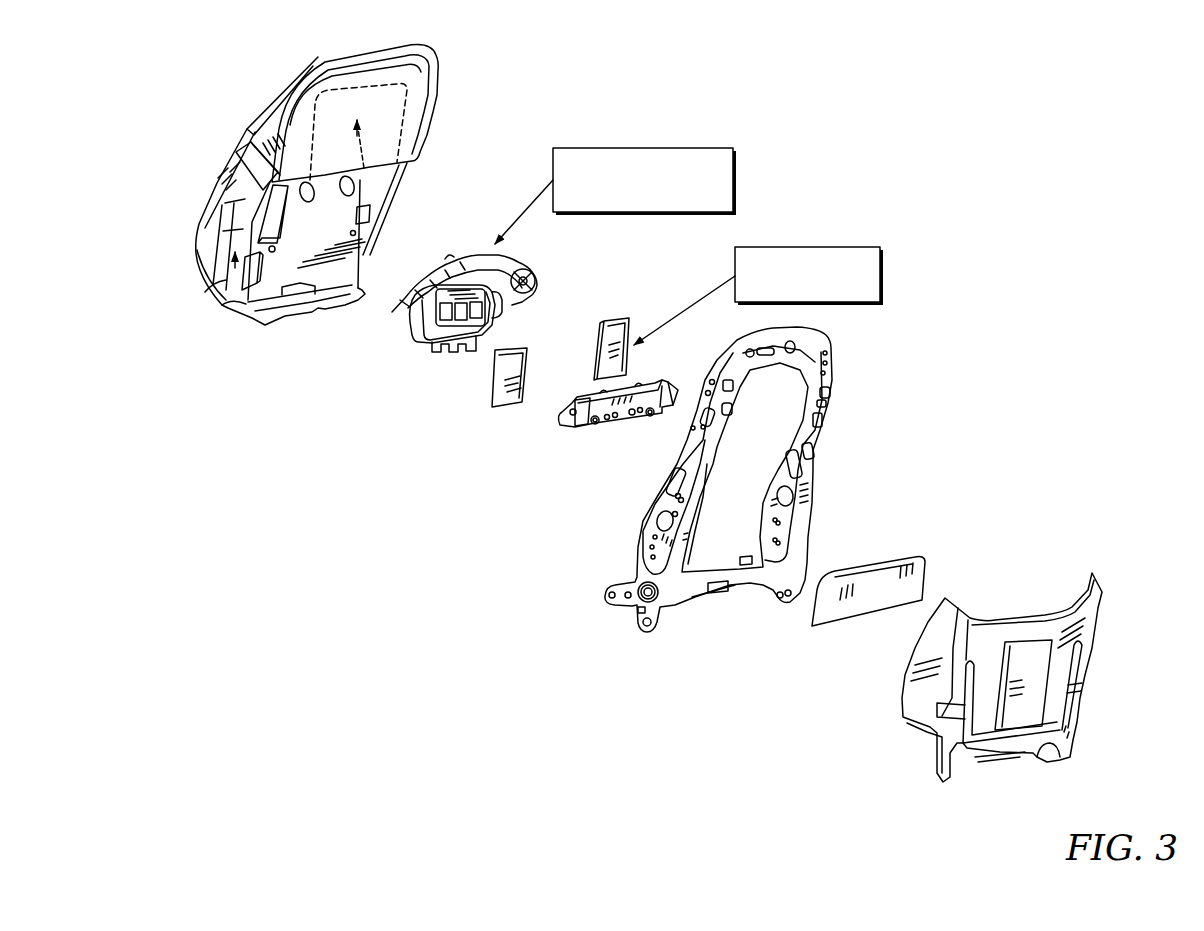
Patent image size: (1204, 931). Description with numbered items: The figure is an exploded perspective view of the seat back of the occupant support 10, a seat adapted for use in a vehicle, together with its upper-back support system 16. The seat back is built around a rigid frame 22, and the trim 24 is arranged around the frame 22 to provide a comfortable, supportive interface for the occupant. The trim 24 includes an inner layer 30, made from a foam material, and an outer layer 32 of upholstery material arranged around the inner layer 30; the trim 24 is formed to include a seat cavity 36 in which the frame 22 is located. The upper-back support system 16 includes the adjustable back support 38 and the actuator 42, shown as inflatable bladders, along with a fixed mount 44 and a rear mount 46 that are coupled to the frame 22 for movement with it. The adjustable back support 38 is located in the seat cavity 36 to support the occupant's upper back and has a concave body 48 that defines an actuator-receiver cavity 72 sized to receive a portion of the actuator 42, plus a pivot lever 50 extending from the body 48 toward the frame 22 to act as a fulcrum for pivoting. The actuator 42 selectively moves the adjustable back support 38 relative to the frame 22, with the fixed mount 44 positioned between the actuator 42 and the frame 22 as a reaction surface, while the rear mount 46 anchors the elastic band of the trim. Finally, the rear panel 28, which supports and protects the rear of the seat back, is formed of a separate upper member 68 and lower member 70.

The occupant support 10 is at (974, 153).
The upper-back support system 16 is at (497, 439).
The frame 22 is at (836, 402).
The trim 24 is at (208, 185).
The rear panel 28 is at (1120, 581).
The inner layer 30 is at (222, 303).
The outer layer 32 is at (186, 232).
The seat cavity 36 is at (363, 170).
The adjustable back support 38 is at (735, 178).
The actuator 42 is at (880, 270).
The fixed mount 44 is at (584, 438).
The rear mount 46 is at (850, 634).
The body 48 is at (485, 298).
The pivot lever 50 is at (423, 347).
The upper member 68 is at (413, 112).
The lower member 70 is at (1080, 650).
The actuator-receiver cavity 72 is at (536, 280).